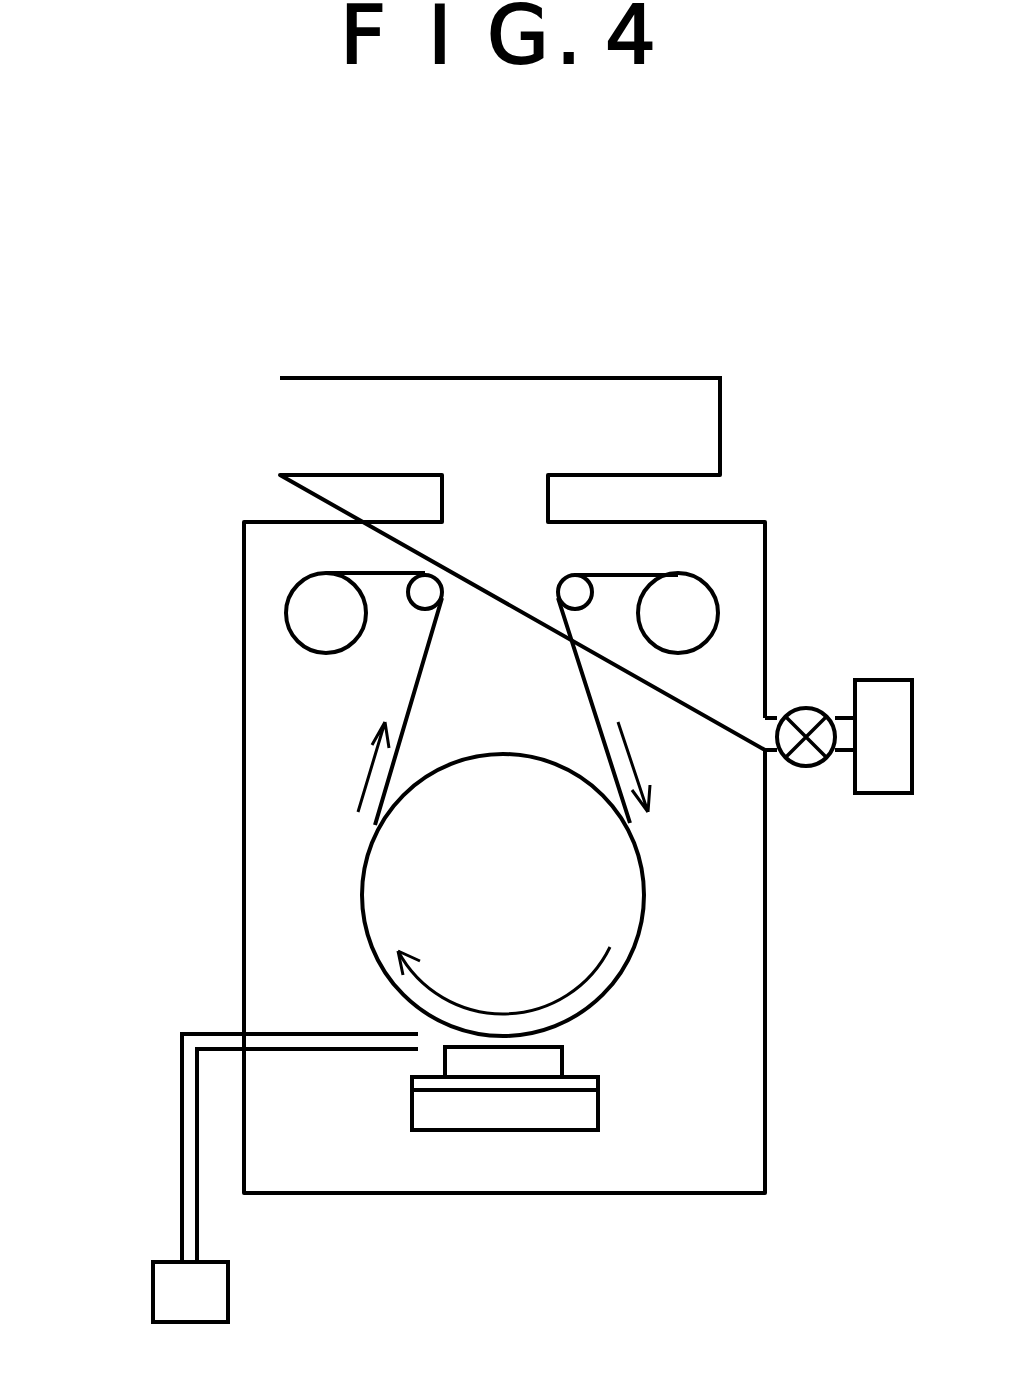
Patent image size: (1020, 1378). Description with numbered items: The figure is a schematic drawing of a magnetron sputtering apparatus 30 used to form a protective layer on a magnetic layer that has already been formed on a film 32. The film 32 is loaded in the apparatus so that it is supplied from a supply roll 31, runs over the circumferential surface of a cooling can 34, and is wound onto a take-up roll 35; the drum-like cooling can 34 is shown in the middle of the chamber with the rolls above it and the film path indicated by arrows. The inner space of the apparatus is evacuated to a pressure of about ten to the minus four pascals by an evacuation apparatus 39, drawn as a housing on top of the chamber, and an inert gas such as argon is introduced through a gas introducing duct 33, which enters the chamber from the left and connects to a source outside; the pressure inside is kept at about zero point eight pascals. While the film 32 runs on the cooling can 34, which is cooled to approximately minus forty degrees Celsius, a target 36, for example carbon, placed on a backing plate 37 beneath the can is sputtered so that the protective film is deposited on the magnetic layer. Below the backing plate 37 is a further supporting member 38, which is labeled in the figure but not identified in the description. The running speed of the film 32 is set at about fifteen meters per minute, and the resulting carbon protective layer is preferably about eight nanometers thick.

The magnetron sputtering apparatus 30 is at (725, 347).
The supply roll 31 is at (700, 598).
The film 32 is at (595, 702).
The gas introducing duct 33 is at (178, 1080).
The cooling can 34 is at (630, 893).
The take-up roll 35 is at (302, 611).
The target 36 is at (550, 1062).
The backing plate 37 is at (598, 1083).
The base 38 is at (562, 1120).
The evacuation apparatus 39 is at (296, 432).